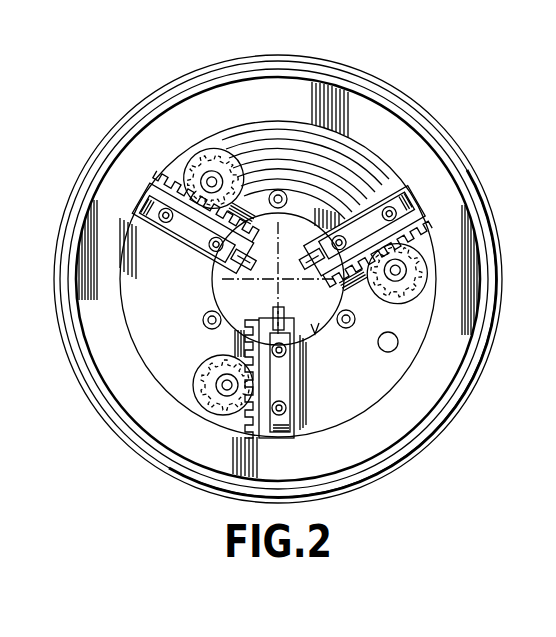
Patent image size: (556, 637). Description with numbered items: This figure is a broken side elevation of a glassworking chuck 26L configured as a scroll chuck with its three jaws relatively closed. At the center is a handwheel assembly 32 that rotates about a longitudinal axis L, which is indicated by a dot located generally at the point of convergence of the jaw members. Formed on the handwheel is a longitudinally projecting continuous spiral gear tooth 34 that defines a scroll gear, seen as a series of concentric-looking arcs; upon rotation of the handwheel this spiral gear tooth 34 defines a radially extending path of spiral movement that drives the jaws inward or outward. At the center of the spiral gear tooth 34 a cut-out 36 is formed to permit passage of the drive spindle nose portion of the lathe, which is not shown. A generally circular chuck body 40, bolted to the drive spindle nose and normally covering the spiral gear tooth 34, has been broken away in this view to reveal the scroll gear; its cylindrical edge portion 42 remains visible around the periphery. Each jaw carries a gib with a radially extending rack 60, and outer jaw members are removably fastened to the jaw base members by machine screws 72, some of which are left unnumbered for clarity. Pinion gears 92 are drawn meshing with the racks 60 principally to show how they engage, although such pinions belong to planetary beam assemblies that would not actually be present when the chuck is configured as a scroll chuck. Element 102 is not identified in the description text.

The chuck 26L is at (474, 147).
The handwheel assembly 32 is at (470, 176).
The spiral gear tooth 34 is at (262, 133).
The cut-out 36 is at (315, 330).
The chuck body 40 is at (381, 377).
The cylindrical edge portion 42 is at (163, 393).
The rack 60 is at (205, 228).
The machine screws 72 is at (140, 218).
The pinion gears 92 is at (202, 140).
The gear 102 is at (207, 232).
The longitudinal axis L is at (268, 285).